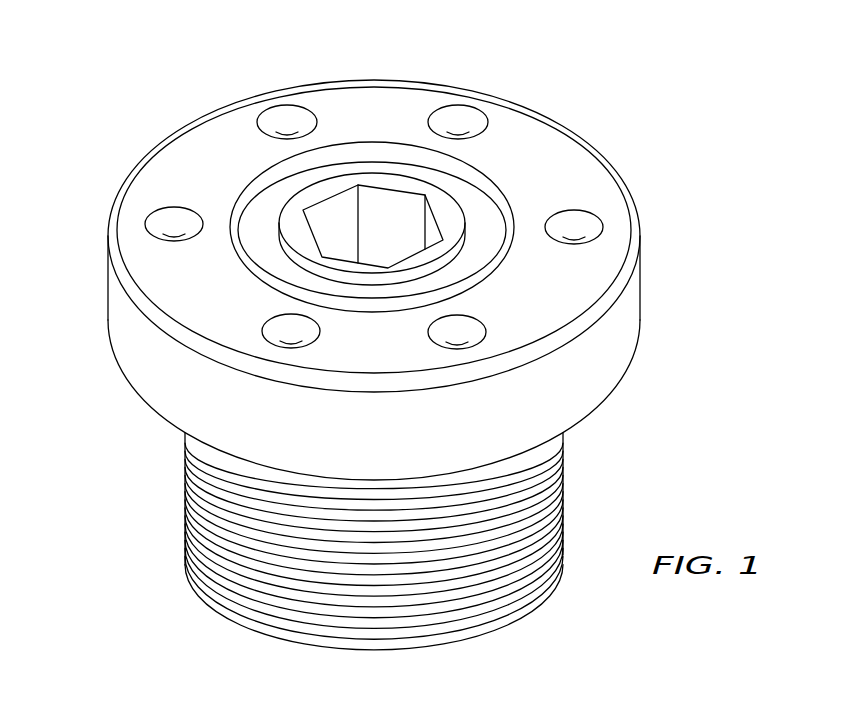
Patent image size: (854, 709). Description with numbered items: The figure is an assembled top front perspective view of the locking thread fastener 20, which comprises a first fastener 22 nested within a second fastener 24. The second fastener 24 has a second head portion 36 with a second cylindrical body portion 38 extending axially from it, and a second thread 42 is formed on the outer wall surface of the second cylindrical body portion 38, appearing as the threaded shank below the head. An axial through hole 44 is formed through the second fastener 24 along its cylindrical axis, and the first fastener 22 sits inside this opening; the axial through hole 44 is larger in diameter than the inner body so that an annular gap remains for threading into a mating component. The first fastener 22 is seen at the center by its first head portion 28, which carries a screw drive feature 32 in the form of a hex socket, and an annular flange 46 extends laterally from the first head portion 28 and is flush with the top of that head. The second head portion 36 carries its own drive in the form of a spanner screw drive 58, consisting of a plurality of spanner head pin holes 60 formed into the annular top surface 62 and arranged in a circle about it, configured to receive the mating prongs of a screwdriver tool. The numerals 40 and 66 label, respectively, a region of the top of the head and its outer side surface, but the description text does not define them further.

The locking thread fastener 20 is at (573, 92).
The first fastener 22 is at (389, 183).
The second fastener 24 is at (642, 262).
The first head portion 28 is at (297, 232).
The screw drive feature 32 is at (338, 218).
The second head portion 36 is at (118, 260).
The second cylindrical body portion 38 is at (503, 620).
The top surface of head 40 is at (140, 206).
The second thread 42 is at (563, 508).
The axial through hole 44 is at (287, 167).
The annular flange 46 is at (484, 241).
The spanner screw drive 58 is at (160, 195).
The spanner head pin holes 60 is at (287, 106).
The annular top surface 62 is at (555, 304).
The side surface of head 66 is at (253, 422).